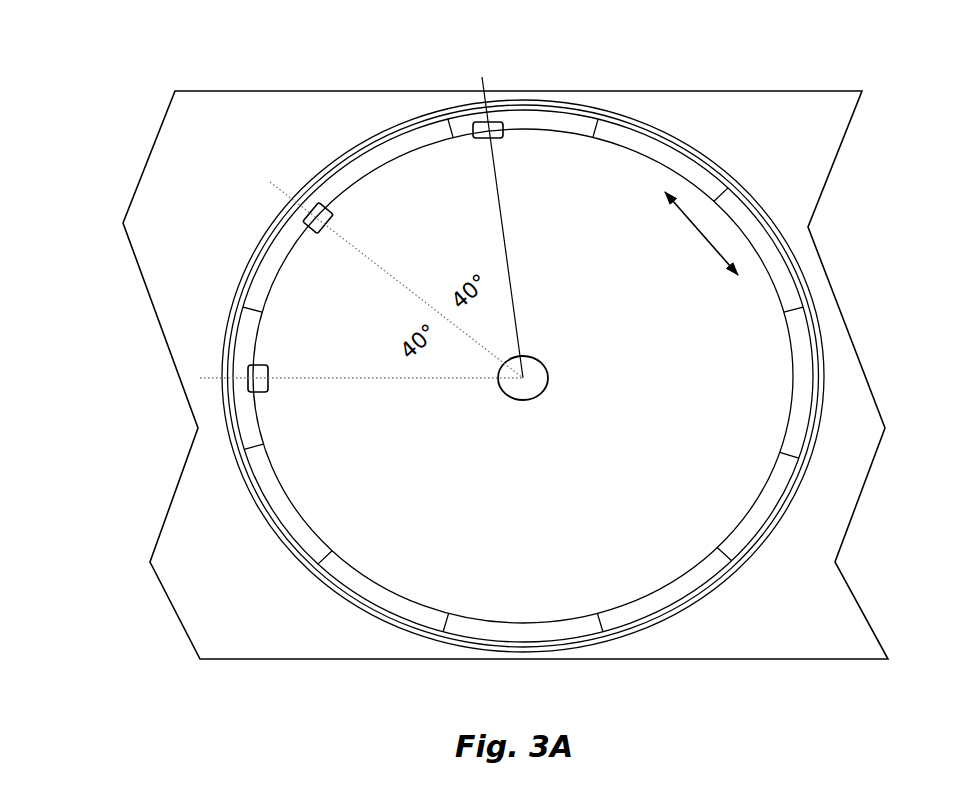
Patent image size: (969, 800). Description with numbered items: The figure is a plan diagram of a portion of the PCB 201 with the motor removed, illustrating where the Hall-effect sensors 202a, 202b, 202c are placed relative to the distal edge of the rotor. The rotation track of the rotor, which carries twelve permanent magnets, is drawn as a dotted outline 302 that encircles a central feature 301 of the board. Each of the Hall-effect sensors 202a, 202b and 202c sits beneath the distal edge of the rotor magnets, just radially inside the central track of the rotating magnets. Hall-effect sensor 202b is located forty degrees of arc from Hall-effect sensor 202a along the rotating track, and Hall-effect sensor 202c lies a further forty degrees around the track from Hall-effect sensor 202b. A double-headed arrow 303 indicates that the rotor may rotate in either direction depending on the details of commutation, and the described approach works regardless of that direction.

The PCB 201 is at (182, 158).
The Hall-effect sensor 202a is at (255, 365).
The Hall-effect sensor 202b is at (318, 203).
The Hall-effect sensor 202c is at (485, 121).
The rotation axis / center 301 is at (522, 357).
The dotted outline 302 is at (598, 108).
The direction 303 is at (692, 222).